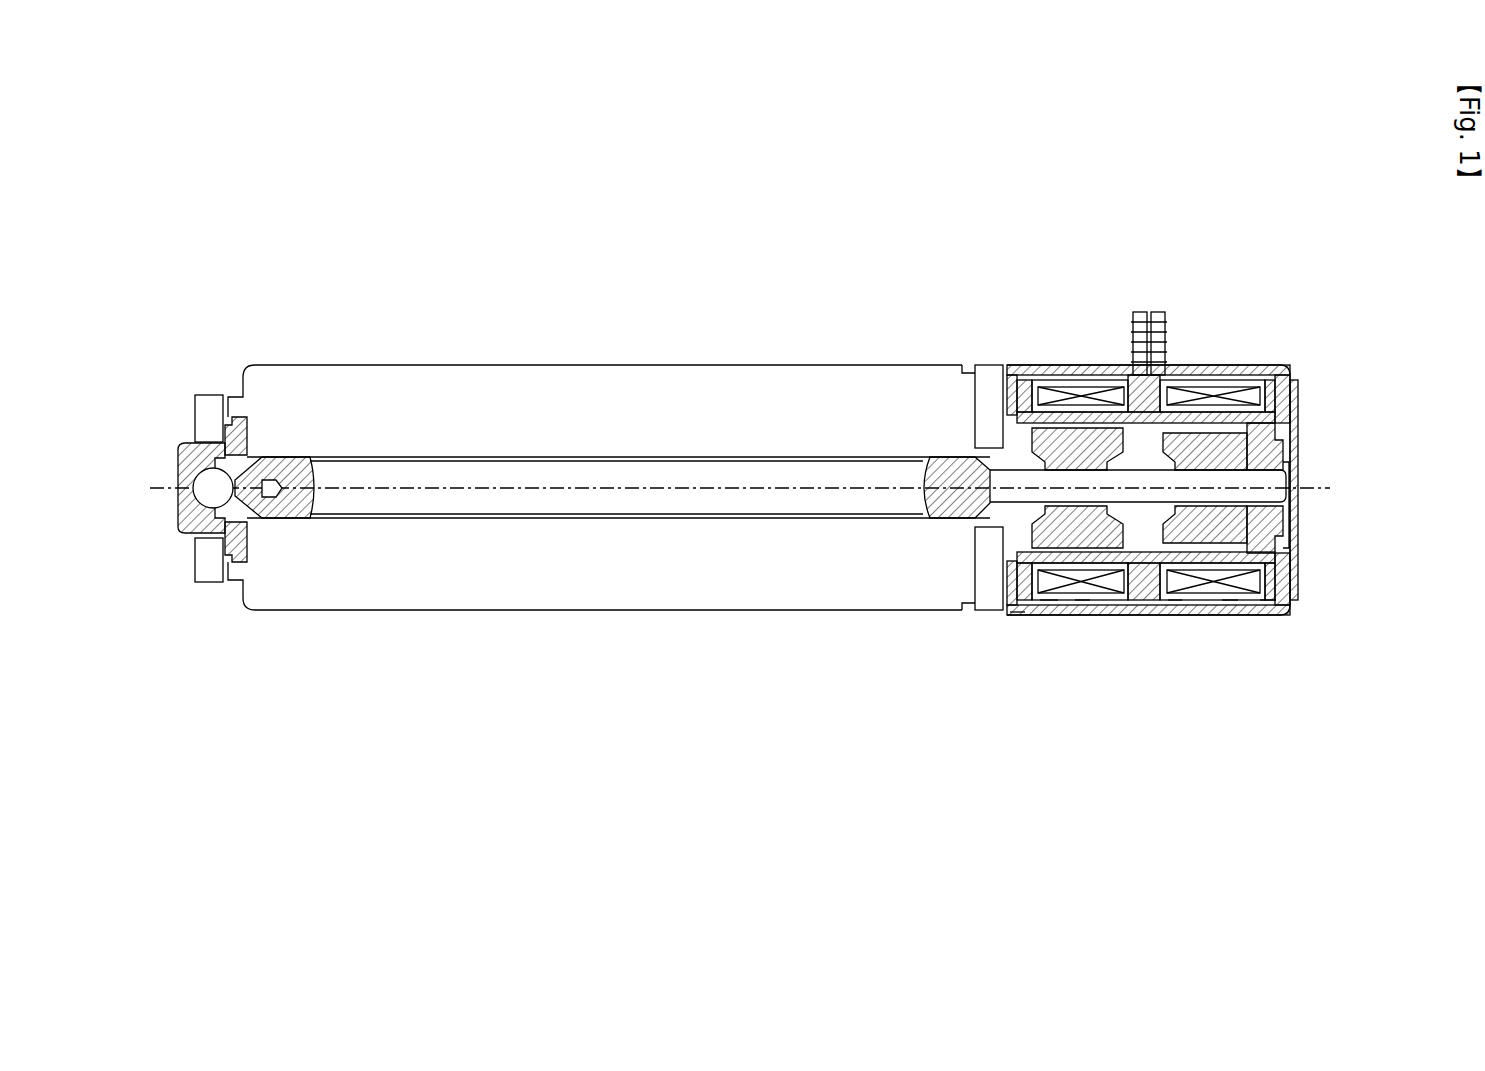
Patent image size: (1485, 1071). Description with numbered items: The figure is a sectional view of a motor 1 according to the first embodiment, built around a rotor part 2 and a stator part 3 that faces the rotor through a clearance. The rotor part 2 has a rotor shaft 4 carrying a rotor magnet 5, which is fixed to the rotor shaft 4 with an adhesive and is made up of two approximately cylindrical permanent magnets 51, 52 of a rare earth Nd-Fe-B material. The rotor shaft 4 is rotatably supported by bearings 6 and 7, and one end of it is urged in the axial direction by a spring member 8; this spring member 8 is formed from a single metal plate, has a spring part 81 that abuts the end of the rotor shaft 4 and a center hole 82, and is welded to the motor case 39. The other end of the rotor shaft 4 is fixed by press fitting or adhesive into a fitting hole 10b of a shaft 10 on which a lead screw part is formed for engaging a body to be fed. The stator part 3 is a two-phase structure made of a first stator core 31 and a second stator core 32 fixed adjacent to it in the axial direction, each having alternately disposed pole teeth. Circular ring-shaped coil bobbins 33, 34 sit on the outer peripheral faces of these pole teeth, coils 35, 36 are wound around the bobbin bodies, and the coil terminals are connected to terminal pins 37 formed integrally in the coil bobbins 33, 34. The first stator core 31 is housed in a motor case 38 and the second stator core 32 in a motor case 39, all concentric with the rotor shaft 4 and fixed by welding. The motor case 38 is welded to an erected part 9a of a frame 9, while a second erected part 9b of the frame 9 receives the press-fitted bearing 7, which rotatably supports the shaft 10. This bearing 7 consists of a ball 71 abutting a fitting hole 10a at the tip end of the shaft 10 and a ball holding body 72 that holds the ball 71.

The motor 1 is at (465, 266).
The rotor part 2 is at (1268, 140).
The stator part 3 is at (1126, 765).
The rotor shaft 4 is at (1250, 370).
The rotor magnet 5 is at (1217, 180).
The permanent magnet 51 is at (1075, 410).
The permanent magnet 52 is at (1200, 395).
The bearing 6 is at (1296, 420).
The bearing 7 is at (130, 563).
The ball 71 is at (207, 498).
The ball holding body 72 is at (190, 527).
The spring member 8 is at (1300, 590).
The spring part 81 is at (1298, 500).
The center hole 82 is at (1298, 440).
The frame 9 is at (385, 392).
The erected part 9a is at (990, 370).
The erected part 9b is at (207, 405).
The shaft 10 is at (478, 475).
The fitting hole 10a is at (275, 495).
The fitting hole 10b is at (955, 470).
The first stator core 31 is at (1130, 612).
The second stator core 32 is at (1152, 612).
The coil bobbin 33 is at (1018, 612).
The coil bobbin 34 is at (1268, 612).
The coil 35 is at (1050, 612).
The coil 36 is at (1175, 612).
The terminal pins 37 is at (1160, 312).
The motor case 38 is at (1082, 612).
The motor case 39 is at (1230, 612).